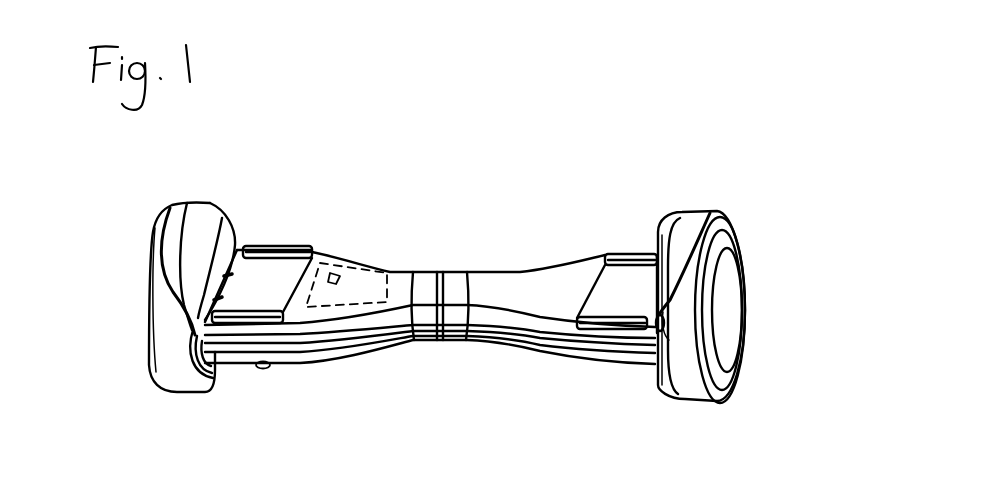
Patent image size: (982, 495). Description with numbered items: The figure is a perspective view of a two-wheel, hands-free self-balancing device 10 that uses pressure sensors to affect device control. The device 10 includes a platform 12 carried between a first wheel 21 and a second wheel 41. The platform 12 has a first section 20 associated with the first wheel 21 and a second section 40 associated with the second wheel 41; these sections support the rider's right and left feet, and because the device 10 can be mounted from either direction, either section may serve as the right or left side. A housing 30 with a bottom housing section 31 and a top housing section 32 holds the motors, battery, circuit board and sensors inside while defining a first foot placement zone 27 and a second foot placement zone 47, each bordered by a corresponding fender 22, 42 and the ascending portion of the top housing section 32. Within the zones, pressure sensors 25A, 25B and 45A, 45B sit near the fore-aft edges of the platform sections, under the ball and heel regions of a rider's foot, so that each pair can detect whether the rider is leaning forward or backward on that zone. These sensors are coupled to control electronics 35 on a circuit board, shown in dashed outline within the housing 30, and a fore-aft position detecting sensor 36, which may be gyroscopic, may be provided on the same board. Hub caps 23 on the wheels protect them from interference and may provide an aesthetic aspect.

The self-balancing device 10 is at (680, 105).
The platform 12 is at (558, 375).
The first section 20 is at (565, 200).
The first wheel 21 is at (720, 403).
The fender 22 is at (698, 212).
The hub cap 23 is at (732, 312).
The pressure sensor 25A is at (633, 330).
The pressure sensor 25B is at (613, 255).
The first foot placement zone 27 is at (642, 233).
The housing 30 is at (305, 395).
The bottom housing section 31 is at (333, 362).
The top housing section 32 is at (533, 264).
The control electronics 35 is at (387, 277).
The fore-aft position detecting sensor 36 is at (340, 270).
The second section 40 is at (350, 192).
The second wheel 41 is at (167, 395).
The fender 42 is at (182, 203).
The pressure sensor 45A is at (250, 325).
The pressure sensor 45B is at (293, 243).
The second foot placement zone 47 is at (245, 223).